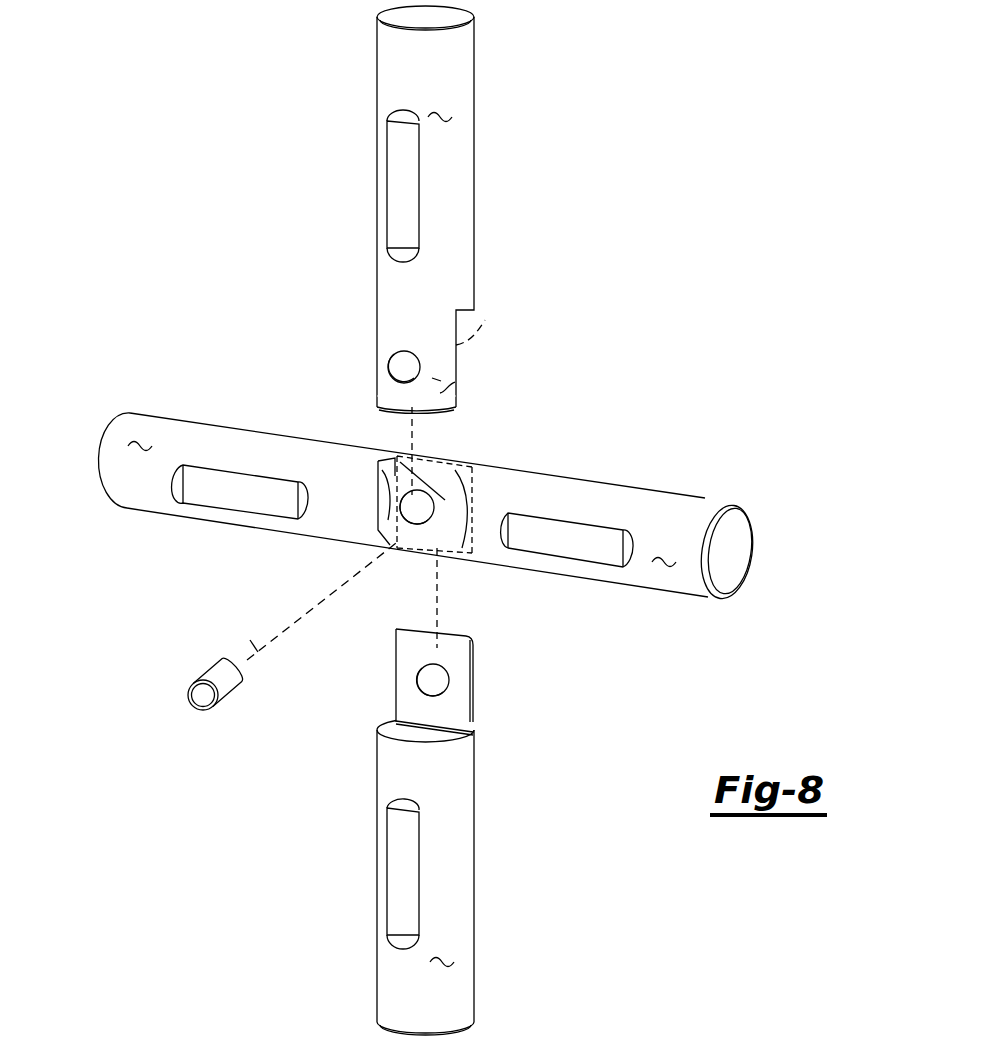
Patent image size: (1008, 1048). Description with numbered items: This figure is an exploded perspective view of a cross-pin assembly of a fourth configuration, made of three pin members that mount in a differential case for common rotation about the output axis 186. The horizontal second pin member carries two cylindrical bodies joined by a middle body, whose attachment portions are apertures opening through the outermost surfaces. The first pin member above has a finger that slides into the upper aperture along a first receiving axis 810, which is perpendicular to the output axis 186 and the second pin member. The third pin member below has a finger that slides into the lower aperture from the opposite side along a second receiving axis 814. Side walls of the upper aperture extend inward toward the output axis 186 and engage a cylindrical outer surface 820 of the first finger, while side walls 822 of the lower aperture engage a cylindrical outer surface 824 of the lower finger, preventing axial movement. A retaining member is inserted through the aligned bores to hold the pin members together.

The output axis 186 is at (250, 640).
The first receiving axis 810 is at (412, 428).
The second receiving axis 814 is at (437, 600).
The outer surface 820 is at (455, 382).
The side walls 822 is at (581, 1035).
The outer surface 824 is at (473, 658).